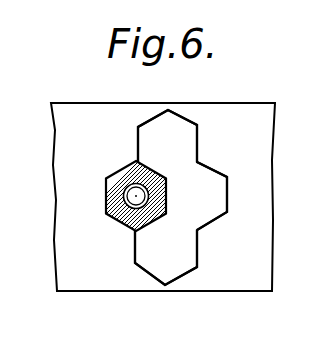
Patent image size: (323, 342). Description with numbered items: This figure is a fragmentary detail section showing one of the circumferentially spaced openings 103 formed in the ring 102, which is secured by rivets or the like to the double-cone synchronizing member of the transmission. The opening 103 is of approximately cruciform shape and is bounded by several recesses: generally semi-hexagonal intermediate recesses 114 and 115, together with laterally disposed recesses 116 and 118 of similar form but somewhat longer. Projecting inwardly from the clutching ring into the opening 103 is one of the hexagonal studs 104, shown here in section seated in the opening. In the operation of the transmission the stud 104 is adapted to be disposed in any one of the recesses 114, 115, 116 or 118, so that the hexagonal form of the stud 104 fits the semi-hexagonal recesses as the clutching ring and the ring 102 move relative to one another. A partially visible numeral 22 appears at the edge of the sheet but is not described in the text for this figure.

The ring 102 is at (253, 243).
The openings 103 is at (174, 130).
The studs 104 is at (133, 165).
The intermediate recess 114 is at (104, 198).
The intermediate recess 115 is at (227, 190).
The laterally disposed recess 116 is at (183, 142).
The laterally disposed recess 118 is at (165, 262).
The member 22 is at (315, 104).